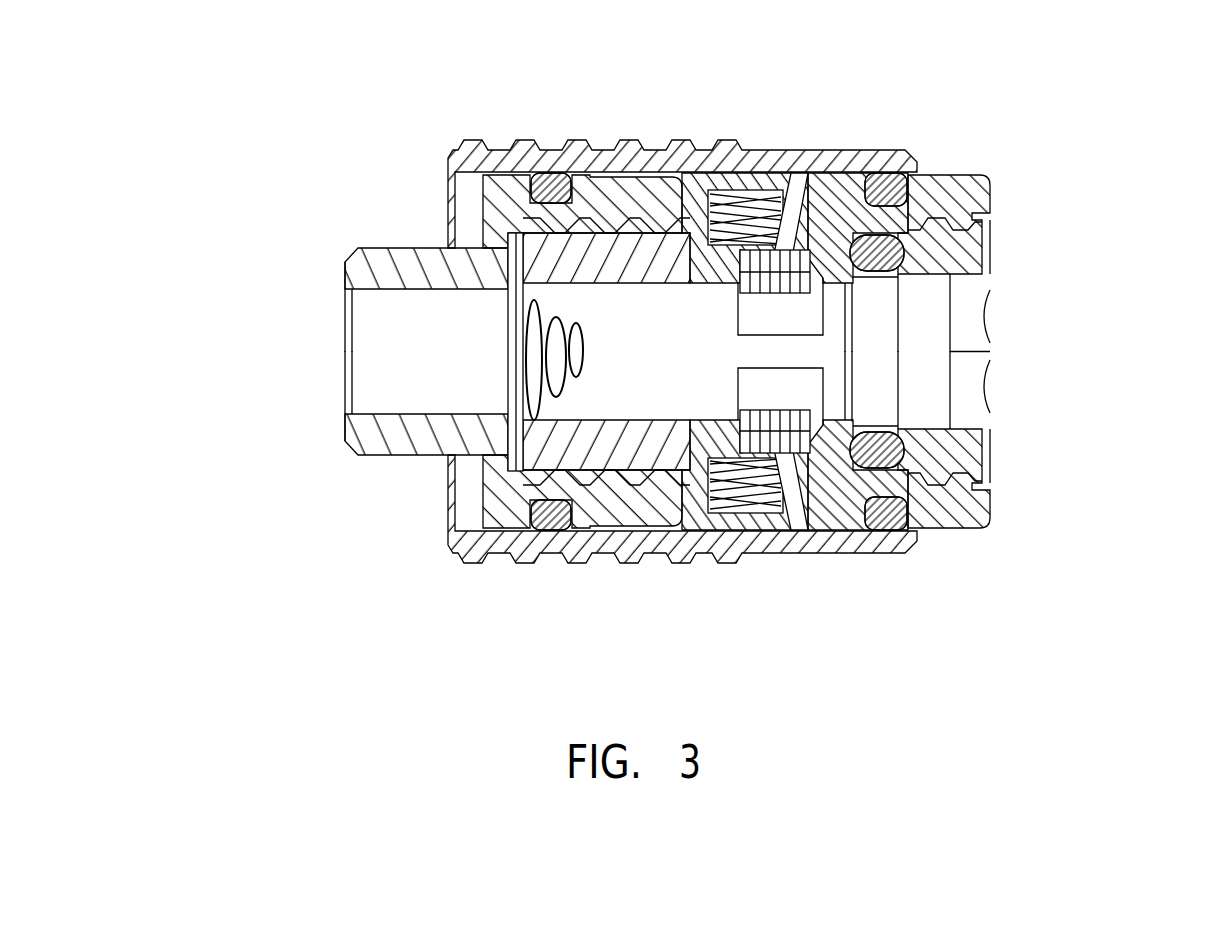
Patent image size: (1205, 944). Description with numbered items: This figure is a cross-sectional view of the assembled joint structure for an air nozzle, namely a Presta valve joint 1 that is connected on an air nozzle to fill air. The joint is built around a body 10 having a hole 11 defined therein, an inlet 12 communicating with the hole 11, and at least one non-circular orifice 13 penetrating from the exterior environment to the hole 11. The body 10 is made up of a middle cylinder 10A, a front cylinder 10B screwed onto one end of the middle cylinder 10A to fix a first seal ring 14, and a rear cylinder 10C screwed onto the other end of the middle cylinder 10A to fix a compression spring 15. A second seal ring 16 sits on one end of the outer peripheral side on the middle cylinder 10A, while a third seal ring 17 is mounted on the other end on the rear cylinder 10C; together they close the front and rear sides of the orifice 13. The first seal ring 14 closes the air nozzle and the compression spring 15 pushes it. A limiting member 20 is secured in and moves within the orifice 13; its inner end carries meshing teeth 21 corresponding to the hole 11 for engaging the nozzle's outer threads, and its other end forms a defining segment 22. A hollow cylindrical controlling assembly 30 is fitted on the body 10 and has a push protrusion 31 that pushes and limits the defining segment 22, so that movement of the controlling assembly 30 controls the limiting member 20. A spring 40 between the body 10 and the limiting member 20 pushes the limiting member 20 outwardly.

The valve joint 1 is at (664, 357).
The body 10 is at (826, 357).
The middle cylinder 10A is at (846, 513).
The front cylinder 10B is at (942, 473).
The rear cylinder 10C is at (642, 503).
The hole 11 is at (963, 334).
The inlet 12 is at (378, 345).
The orifice 13 is at (838, 190).
The first seal ring 14 is at (883, 435).
The compression spring 15 is at (556, 352).
The second seal ring 16 is at (888, 185).
The third seal ring 17 is at (548, 190).
The limiting member 20 is at (802, 212).
The meshing teeth 21 is at (740, 317).
The defining segment 22 is at (790, 192).
The controlling assembly 30 is at (635, 143).
The push protrusion 31 is at (716, 185).
The spring 40 is at (758, 489).